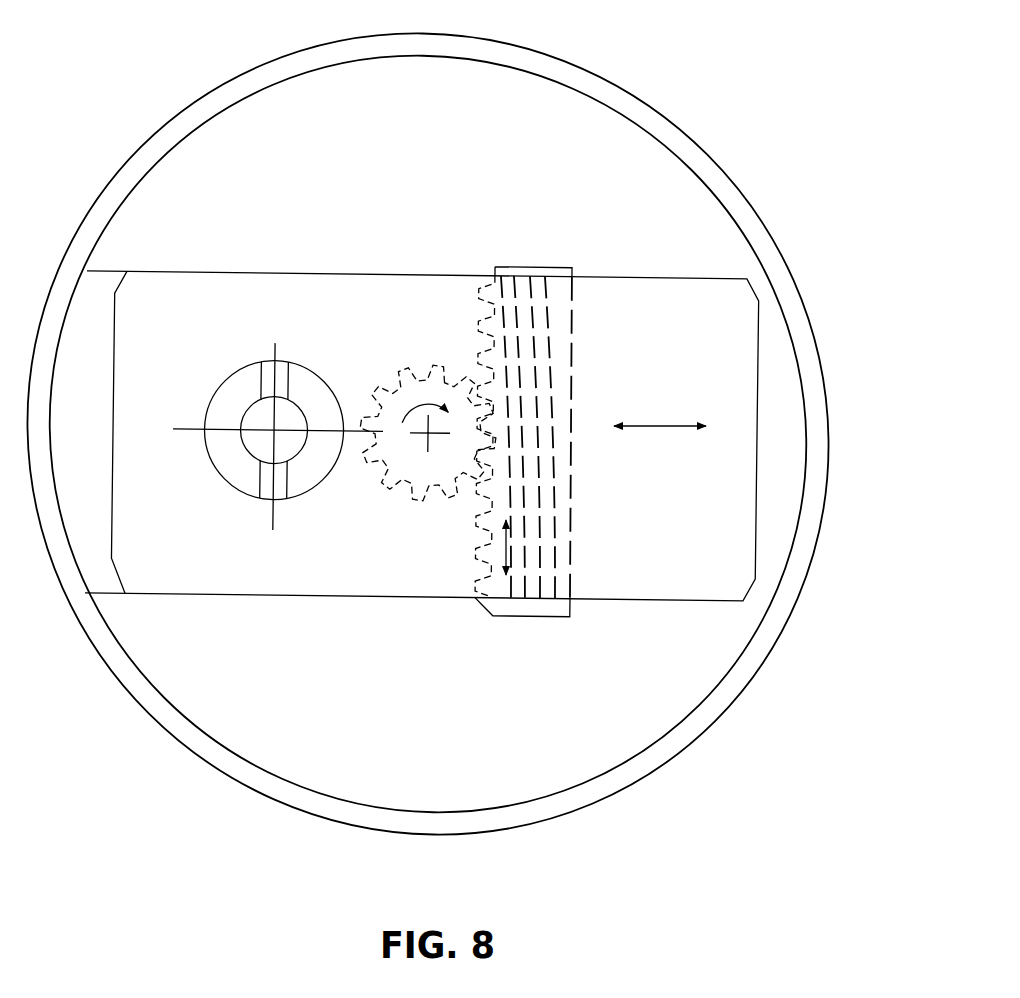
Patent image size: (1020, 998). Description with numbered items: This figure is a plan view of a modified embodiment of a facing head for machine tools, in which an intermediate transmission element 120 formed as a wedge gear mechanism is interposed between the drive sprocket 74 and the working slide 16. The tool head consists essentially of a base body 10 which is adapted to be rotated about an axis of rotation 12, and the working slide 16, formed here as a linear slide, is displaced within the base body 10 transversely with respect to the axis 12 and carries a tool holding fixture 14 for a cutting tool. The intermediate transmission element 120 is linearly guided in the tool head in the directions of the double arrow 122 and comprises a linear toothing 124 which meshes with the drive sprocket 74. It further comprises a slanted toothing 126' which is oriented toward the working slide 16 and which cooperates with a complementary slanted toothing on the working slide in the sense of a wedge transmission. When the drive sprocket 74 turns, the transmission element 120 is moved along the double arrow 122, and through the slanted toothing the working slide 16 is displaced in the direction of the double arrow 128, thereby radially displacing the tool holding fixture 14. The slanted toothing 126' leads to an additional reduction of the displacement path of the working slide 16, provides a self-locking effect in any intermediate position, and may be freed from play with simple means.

The base body 10 is at (585, 135).
The axis of rotation 12 is at (432, 415).
The tool holding fixture 14 is at (312, 378).
The working slide 16 is at (632, 330).
The drive sprocket 74 is at (423, 465).
The intermediate transmission element 120 is at (512, 603).
The double arrow 122 is at (503, 545).
The linear toothing 124 is at (477, 290).
The slanted toothing 126' is at (612, 441).
The double arrow 128 is at (665, 427).